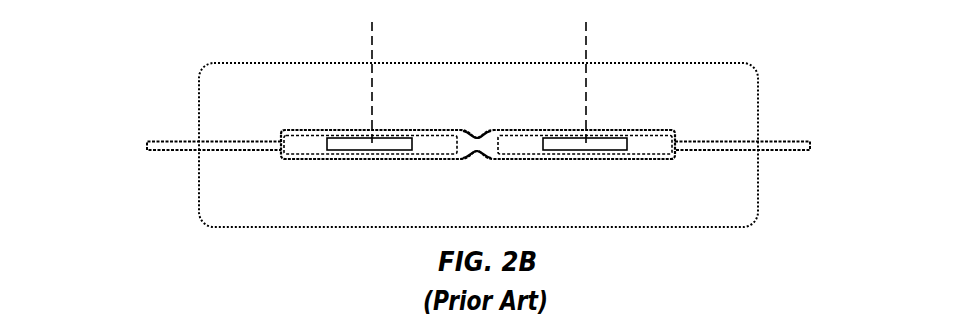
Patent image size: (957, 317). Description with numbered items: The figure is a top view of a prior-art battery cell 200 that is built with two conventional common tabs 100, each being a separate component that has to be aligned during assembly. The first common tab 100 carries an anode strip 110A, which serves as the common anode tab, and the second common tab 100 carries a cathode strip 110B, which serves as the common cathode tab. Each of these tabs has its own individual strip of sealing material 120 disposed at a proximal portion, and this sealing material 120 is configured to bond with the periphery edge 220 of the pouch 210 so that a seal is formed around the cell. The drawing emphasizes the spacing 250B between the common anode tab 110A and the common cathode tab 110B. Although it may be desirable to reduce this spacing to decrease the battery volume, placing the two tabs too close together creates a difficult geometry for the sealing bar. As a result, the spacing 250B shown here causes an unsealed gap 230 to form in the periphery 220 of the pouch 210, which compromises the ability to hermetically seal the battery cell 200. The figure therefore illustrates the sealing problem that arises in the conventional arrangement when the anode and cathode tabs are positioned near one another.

The battery cell 200 is at (88, 40).
The pouch 210 is at (725, 63).
The common tab 100 is at (672, 130).
The anode strip 110A is at (328, 143).
The cathode strip 110B is at (630, 145).
The strip of sealing material 120 is at (280, 144).
The periphery edge 220 is at (781, 141).
The unsealed gap 230 is at (482, 147).
The spacing 250B is at (586, 30).